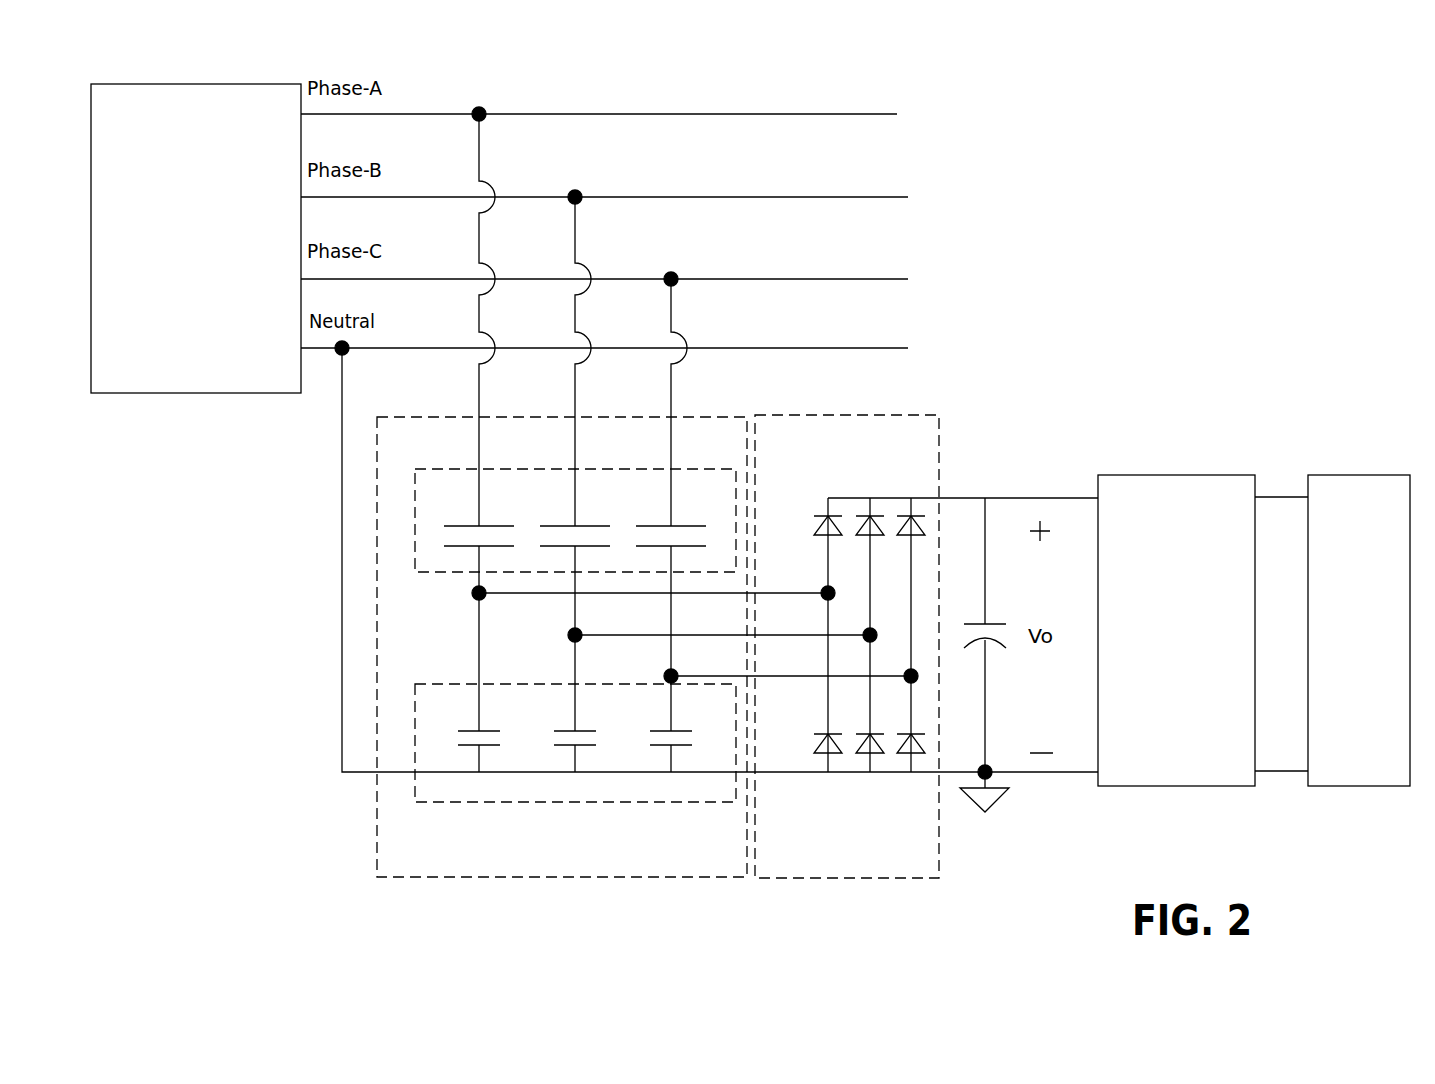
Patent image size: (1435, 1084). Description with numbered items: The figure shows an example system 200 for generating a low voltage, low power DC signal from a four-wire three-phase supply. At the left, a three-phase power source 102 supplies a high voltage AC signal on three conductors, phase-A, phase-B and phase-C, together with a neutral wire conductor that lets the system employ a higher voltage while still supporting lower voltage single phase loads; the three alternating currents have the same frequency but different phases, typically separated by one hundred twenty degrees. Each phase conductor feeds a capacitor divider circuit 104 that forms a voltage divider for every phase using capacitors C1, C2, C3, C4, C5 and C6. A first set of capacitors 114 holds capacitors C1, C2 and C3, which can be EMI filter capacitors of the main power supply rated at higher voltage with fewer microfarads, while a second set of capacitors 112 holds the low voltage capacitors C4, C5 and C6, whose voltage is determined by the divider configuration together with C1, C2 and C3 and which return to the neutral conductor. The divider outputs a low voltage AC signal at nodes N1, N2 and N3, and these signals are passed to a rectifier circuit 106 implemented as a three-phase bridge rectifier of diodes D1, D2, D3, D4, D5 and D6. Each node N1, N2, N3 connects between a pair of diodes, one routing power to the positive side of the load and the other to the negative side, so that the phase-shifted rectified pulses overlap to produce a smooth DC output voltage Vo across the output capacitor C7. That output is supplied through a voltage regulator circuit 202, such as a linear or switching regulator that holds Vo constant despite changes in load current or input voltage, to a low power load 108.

The system 200 is at (1310, 125).
The three-phase power source 102 is at (225, 396).
The capacitor divider circuit 104 is at (377, 872).
The rectifier circuit 106 is at (847, 878).
The load 108 is at (1367, 475).
The second set of capacitors 112 is at (415, 701).
The first set of capacitors 114 is at (415, 525).
The voltage regulator circuit 202 is at (1175, 475).
The capacitor C1 is at (480, 609).
The capacitor C2 is at (576, 609).
The capacitor C3 is at (672, 609).
The capacitor C4 is at (486, 731).
The capacitor C5 is at (582, 731).
The capacitor C6 is at (678, 731).
The output capacitor C7 is at (979, 635).
The diode D1 is at (821, 540).
The diode D2 is at (863, 540).
The diode D3 is at (905, 540).
The diode D4 is at (821, 732).
The diode D5 is at (863, 732).
The diode D6 is at (905, 732).
The node N1 is at (637, 596).
The node N2 is at (705, 635).
The node N3 is at (775, 673).